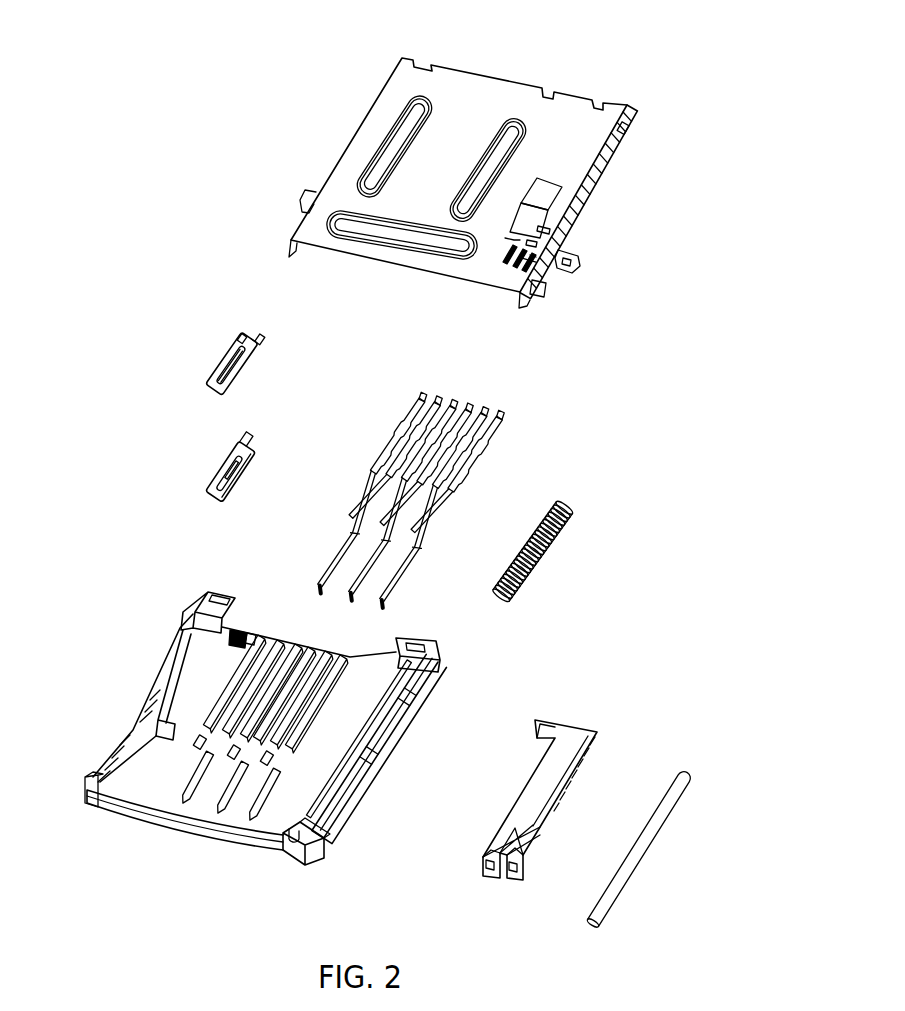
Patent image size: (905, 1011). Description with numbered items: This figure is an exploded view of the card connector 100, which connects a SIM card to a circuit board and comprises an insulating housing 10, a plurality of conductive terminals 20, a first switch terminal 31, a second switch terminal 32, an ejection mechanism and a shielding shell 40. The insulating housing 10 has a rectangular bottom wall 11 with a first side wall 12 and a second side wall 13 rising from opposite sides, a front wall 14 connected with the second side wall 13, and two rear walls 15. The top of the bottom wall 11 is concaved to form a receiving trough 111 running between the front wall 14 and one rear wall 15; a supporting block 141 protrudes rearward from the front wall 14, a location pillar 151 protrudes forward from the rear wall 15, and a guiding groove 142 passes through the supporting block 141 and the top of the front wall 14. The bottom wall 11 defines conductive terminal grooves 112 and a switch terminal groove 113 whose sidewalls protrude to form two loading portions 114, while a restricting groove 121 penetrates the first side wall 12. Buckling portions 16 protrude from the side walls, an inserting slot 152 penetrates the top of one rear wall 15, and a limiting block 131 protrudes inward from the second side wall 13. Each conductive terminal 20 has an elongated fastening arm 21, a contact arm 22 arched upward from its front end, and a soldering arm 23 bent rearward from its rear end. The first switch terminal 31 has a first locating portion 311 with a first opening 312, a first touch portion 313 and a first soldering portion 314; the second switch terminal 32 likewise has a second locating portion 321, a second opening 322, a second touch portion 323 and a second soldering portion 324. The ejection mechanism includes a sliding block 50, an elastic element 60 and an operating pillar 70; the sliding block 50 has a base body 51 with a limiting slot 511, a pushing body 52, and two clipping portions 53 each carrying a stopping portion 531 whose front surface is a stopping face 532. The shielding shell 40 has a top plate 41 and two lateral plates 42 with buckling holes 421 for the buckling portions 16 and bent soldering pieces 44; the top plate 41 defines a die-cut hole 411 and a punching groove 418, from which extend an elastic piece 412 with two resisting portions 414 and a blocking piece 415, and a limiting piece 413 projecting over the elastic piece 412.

The card connector 100 is at (168, 41).
The insulating housing 10 is at (105, 670).
The bottom wall 11 is at (145, 797).
The receiving trough 111 is at (350, 768).
The conductive terminal grooves 112 is at (305, 650).
The switch terminal groove 113 is at (240, 645).
The loading portions 114 is at (245, 632).
The first side wall 12 is at (182, 632).
The restricting groove 121 is at (158, 703).
The second side wall 13 is at (410, 688).
The limiting block 131 is at (397, 700).
The front wall 14 is at (312, 852).
The supporting block 141 is at (320, 823).
The guiding groove 142 is at (293, 841).
The rear walls 15 is at (219, 591).
The location pillar 151 is at (410, 657).
The inserting slot 152 is at (215, 596).
The buckling portions 16 is at (387, 750).
The conductive terminals 20 is at (447, 395).
The fastening arm 21 is at (390, 455).
The contact arm 22 is at (360, 490).
The soldering arm 23 is at (423, 399).
The first switch terminal 31 is at (172, 355).
The first locating portion 311 is at (233, 343).
The first opening 312 is at (247, 346).
The first touch portion 313 is at (240, 340).
The first soldering portion 314 is at (266, 337).
The second switch terminal 32 is at (165, 463).
The second locating portion 321 is at (256, 453).
The second opening 322 is at (248, 472).
The second touch portion 323 is at (220, 475).
The second soldering portion 324 is at (250, 440).
The shielding shell 40 is at (265, 110).
The top plate 41 is at (345, 241).
The die-cut hole 411 is at (548, 230).
The elastic piece 412 is at (505, 262).
The limiting piece 413 is at (538, 217).
The resisting portions 414 is at (520, 240).
The blocking piece 415 is at (535, 243).
The punching groove 418 is at (546, 193).
The lateral plates 42 is at (613, 155).
The buckling holes 421 is at (630, 138).
The soldering pieces 44 is at (300, 200).
The sliding block 50 is at (588, 705).
The base body 51 is at (550, 800).
The limiting slot 511 is at (570, 780).
The pushing body 52 is at (540, 740).
The clipping portions 53 is at (483, 870).
The stopping portion 531 is at (507, 853).
The stopping face 532 is at (493, 852).
The elastic element 60 is at (535, 553).
The operating pillar 70 is at (672, 830).